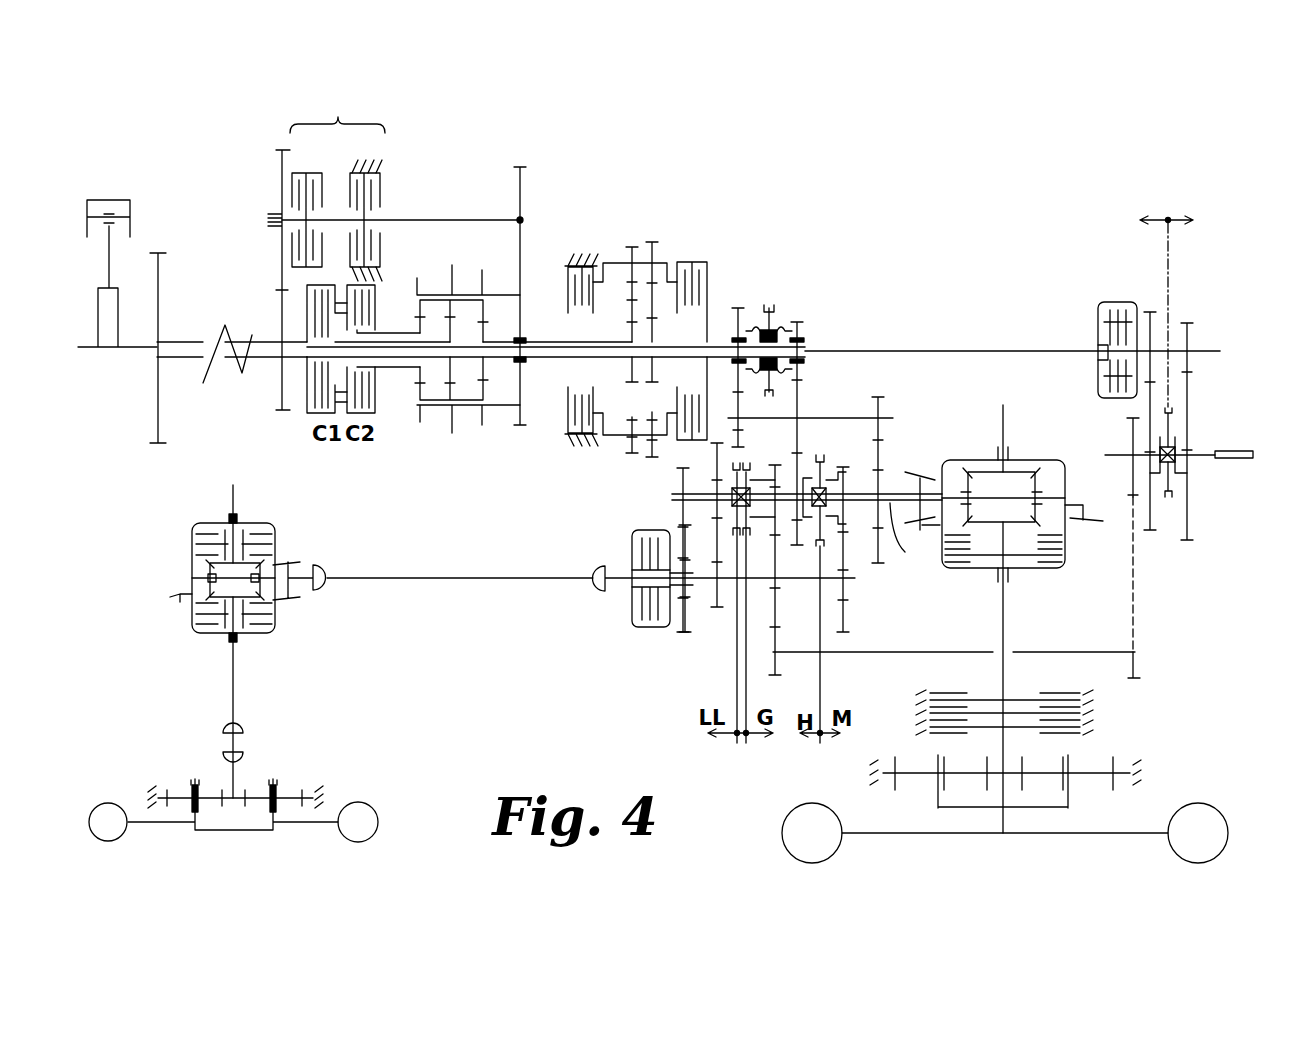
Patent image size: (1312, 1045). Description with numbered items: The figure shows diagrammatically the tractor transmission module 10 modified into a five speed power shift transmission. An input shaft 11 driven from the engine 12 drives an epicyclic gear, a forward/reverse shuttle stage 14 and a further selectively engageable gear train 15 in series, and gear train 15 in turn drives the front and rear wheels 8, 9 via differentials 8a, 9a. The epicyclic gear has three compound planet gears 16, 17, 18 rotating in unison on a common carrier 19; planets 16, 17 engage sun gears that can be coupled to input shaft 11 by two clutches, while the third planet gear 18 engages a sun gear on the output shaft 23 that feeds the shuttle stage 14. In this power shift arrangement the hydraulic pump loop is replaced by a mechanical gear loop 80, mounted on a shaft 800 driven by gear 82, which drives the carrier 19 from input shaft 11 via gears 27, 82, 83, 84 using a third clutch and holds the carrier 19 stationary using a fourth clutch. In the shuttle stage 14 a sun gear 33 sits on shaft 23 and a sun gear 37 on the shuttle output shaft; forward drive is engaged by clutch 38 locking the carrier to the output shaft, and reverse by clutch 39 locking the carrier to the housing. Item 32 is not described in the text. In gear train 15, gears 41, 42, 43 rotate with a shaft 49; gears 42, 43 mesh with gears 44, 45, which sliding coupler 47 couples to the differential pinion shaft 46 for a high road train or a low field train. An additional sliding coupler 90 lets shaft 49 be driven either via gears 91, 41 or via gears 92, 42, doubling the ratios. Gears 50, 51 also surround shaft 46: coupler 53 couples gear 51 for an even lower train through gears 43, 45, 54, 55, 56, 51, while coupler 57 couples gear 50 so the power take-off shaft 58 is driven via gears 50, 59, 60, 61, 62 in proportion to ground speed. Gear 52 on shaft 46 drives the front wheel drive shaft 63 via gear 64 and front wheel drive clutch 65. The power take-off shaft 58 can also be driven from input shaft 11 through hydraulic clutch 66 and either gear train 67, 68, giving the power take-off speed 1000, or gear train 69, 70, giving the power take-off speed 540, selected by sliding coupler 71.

The power-branched transmission module 10 is at (269, 127).
The input shaft 11 is at (186, 345).
The engine 12 is at (101, 200).
The forward/reverse shuttle stage 14 is at (656, 225).
The further selectively engageable gear train 15 is at (863, 575).
The compound planet gear 16 is at (418, 278).
The compound planet gear 17 is at (453, 267).
The third planet gear 18 is at (482, 270).
The common carrier 19 is at (500, 290).
The output shaft of the epicyclic gear 23 is at (546, 345).
The gear 27 is at (262, 321).
The planetary gear set 32 is at (483, 336).
The sun gear 33 is at (628, 331).
The sun gear 37 is at (658, 330).
The forward clutch 38 is at (690, 297).
The reverse clutch 39 is at (573, 310).
The gear 41 is at (745, 405).
The gear 42 is at (800, 400).
The gear 43 is at (880, 406).
The gear 44 is at (800, 470).
The gear 45 is at (879, 470).
The differential pinion shaft 46 is at (915, 520).
The sliding coupler 47 is at (830, 470).
The shaft 49 is at (860, 418).
The gear 50 is at (770, 470).
The gear 51 is at (715, 470).
The gear 52 is at (683, 490).
The sliding coupler 53 is at (735, 524).
The gear 54 is at (846, 505).
The gear 55 is at (845, 600).
The gear 56 is at (718, 608).
The sliding coupler 57 is at (748, 525).
The PTO shaft 58 is at (1240, 460).
The gear 59 is at (776, 603).
The gear 60 is at (776, 660).
The gear 61 is at (1137, 652).
The gear 62 is at (1130, 436).
The front wheel drive shaft 63 is at (428, 575).
The gear 64 is at (685, 617).
The front wheel drive clutch 65 is at (637, 545).
The hydraulic clutch 66 is at (1100, 333).
The gear 67 is at (1148, 310).
The gear 68 is at (1148, 410).
The gear 69 is at (1190, 338).
The gear 70 is at (1189, 512).
The sliding coupler 71 is at (1172, 420).
The mechanical gear loop 80 is at (337, 188).
The gear 82 is at (280, 165).
The gear 83 is at (520, 190).
The gear 84 is at (520, 405).
The additional sliding coupler 90 is at (770, 302).
The gear 91 is at (737, 326).
The gear 92 is at (795, 330).
The shaft 800 is at (441, 217).
The PTO shaft speed of 1000 r.p.m. 1000 is at (1146, 208).
The PTO shaft speed of 540 r.p.m. 540 is at (1197, 204).
The front wheels 8 is at (108, 808).
The front differential 8a is at (199, 537).
The rear wheels 9 is at (1201, 818).
The rear differential 9a is at (1037, 567).